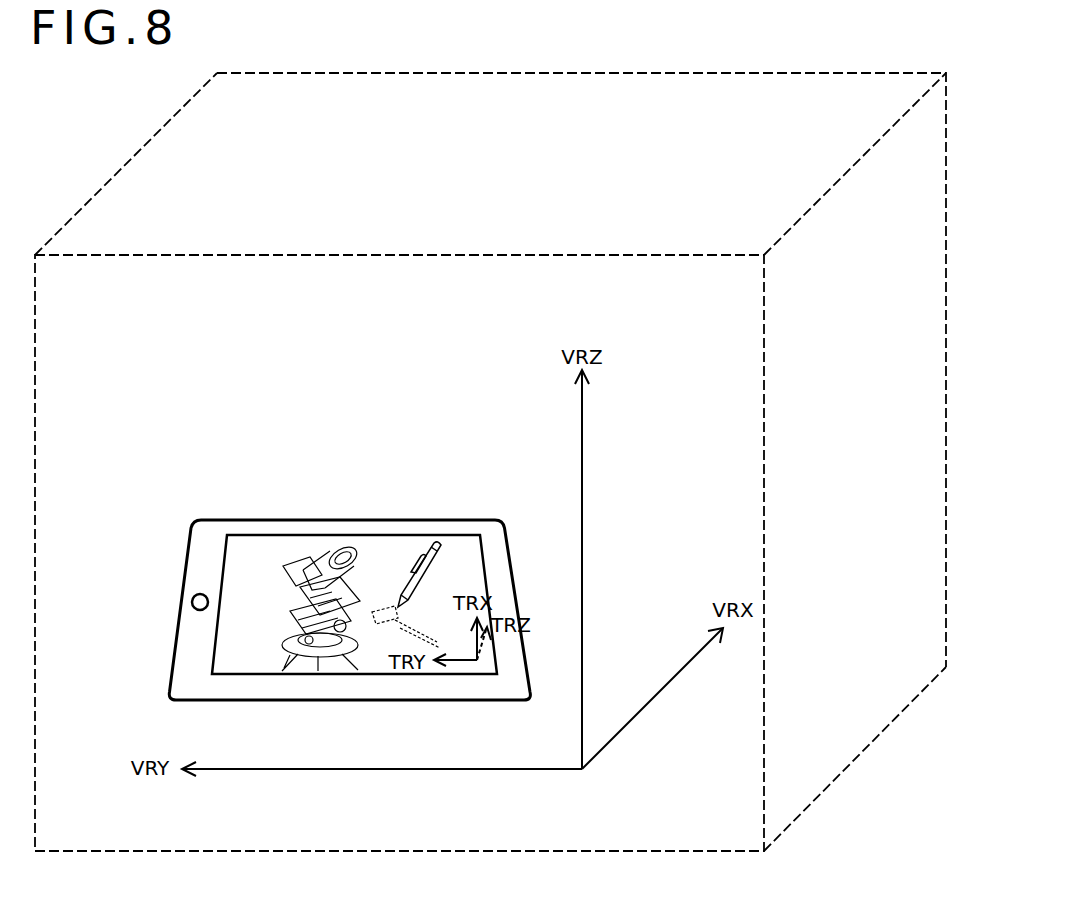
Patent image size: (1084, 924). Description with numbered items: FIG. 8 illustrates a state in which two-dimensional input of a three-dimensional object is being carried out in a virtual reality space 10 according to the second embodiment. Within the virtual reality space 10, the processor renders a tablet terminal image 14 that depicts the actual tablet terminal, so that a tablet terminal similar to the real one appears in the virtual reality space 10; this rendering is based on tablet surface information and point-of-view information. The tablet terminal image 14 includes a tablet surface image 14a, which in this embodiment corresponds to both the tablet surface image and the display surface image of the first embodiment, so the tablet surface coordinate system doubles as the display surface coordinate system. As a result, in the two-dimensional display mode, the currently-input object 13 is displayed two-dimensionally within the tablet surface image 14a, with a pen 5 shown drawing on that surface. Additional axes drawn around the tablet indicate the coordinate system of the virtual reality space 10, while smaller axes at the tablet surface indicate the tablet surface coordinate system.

The virtual reality space 10 is at (708, 852).
The tablet terminal image 14 is at (212, 534).
The tablet surface image 14a is at (460, 545).
The currently-input object 13 is at (305, 568).
The stylus pen 5 is at (412, 580).